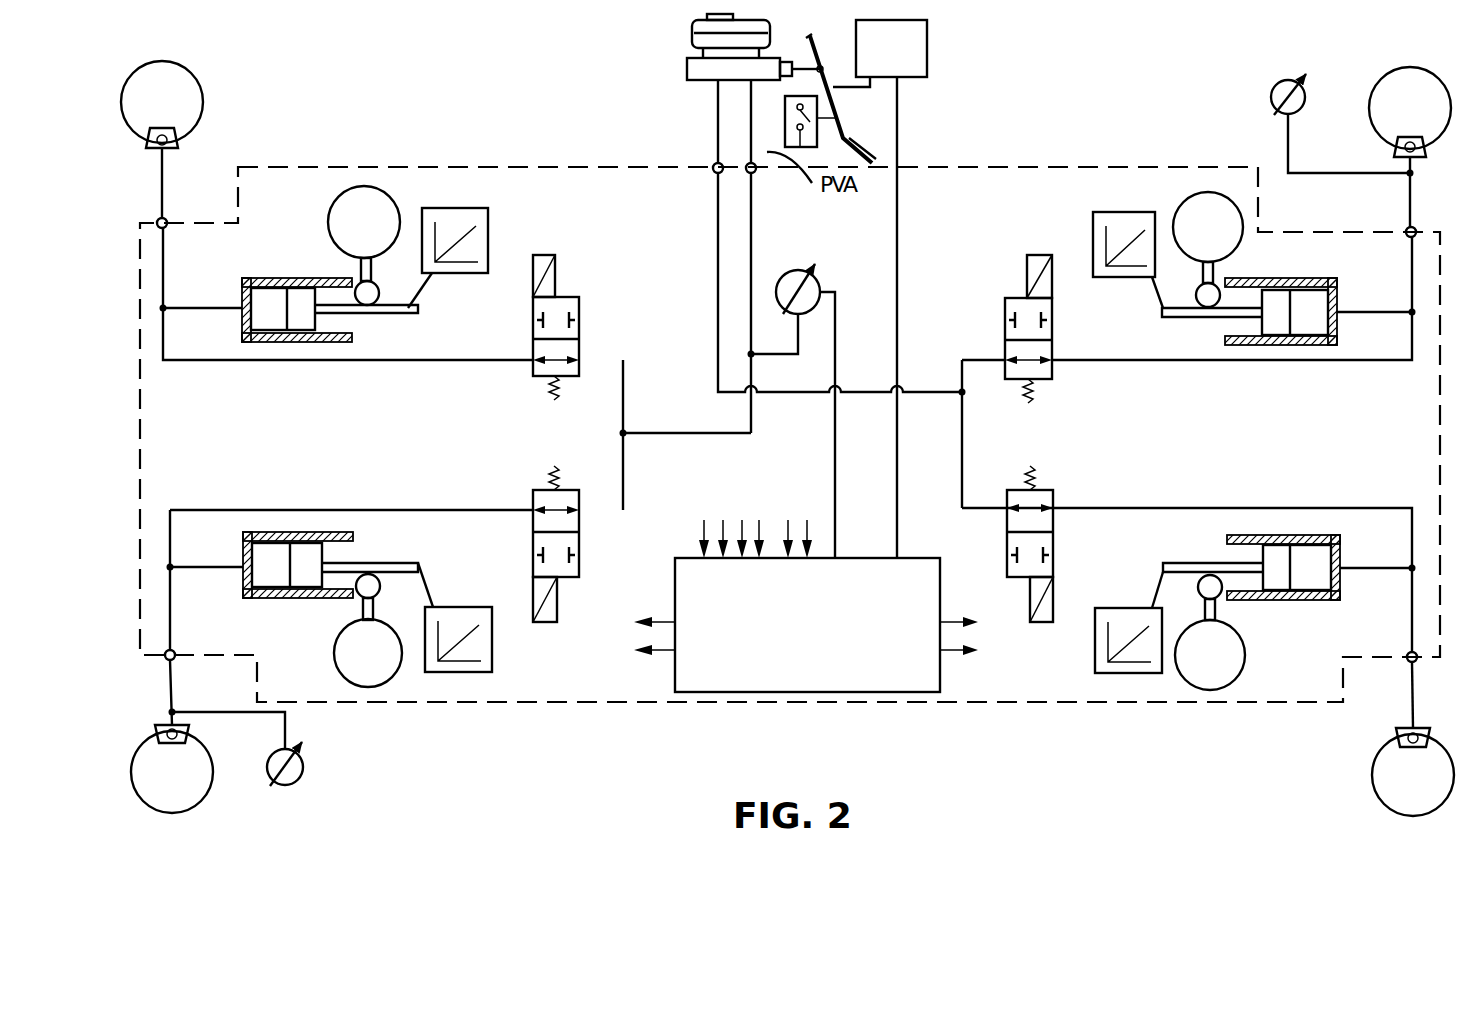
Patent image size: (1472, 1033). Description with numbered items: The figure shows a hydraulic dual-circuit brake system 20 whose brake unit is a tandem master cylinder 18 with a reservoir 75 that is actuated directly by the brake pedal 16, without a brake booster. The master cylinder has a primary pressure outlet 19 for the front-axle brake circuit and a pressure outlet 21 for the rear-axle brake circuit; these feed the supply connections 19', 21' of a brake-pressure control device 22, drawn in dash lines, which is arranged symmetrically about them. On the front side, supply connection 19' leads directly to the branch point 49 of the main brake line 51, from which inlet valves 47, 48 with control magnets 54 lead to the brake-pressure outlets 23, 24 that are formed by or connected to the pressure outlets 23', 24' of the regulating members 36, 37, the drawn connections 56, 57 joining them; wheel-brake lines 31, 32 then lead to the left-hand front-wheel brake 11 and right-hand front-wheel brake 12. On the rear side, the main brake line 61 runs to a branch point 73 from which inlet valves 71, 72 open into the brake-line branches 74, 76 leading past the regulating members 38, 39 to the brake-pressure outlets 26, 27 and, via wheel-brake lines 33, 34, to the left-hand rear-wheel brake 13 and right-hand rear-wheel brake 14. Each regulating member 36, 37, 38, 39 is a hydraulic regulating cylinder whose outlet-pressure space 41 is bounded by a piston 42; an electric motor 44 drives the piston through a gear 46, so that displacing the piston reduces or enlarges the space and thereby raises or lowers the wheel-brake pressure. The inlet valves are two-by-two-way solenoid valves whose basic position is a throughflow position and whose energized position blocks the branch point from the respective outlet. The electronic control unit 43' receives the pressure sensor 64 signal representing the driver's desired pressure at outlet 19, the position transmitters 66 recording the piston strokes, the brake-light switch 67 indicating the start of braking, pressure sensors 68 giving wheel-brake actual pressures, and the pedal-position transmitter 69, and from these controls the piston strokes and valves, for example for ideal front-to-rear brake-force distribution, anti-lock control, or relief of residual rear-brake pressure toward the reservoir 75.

The left-hand front-wheel brake 11 is at (207, 783).
The right-hand front-wheel brake 12 is at (195, 114).
The left-hand rear-wheel brake 13 is at (1373, 768).
The right-hand rear-wheel brake 14 is at (1370, 120).
The brake pedal 16 is at (843, 118).
The tandem master cylinder 18 is at (668, 66).
The primary pressure outlet 19 is at (738, 256).
The supply connection 19' is at (778, 188).
The brake system 20 is at (500, 105).
The pressure outlet 21 is at (798, 236).
The supply connection 21' is at (684, 188).
The brake-pressure control device 22 is at (948, 158).
The brake-pressure outlet 23 is at (196, 638).
The pressure outlet of regulating member 23' is at (212, 597).
The brake-pressure outlet 24 is at (185, 238).
The pressure outlet of regulating member 24' is at (210, 288).
The brake-pressure outlet 26 is at (1414, 663).
The brake-pressure outlet 27 is at (1414, 227).
The wheel-brake line 31 is at (175, 690).
The wheel-brake line 32 is at (164, 182).
The wheel-brake line 33 is at (1410, 695).
The wheel-brake line 34 is at (1408, 195).
The brake-pressure regulating member 36 is at (241, 552).
The brake-pressure regulating member 37 is at (240, 318).
The brake-pressure regulating member 38 is at (1343, 582).
The brake-pressure regulating member 39 is at (1342, 306).
The outlet-pressure space 41 is at (268, 290).
The piston 42 is at (300, 290).
The electronic control unit 43' is at (836, 606).
The electric motor 44 is at (336, 212).
The gear 46 is at (383, 292).
The inlet valve 47 is at (533, 500).
The inlet valve 48 is at (535, 375).
The branch point 49 is at (621, 433).
The main brake line 51 is at (670, 430).
The control magnet 54 is at (556, 258).
The line to actuator 36 56 is at (405, 510).
The line to actuator 37 57 is at (400, 362).
The main brake line 61 is at (717, 300).
The pressure sensor 64 is at (822, 286).
The position transmitter 66 is at (470, 275).
The brake-light switch 67 is at (785, 120).
The pressure sensor 68 is at (304, 767).
The pedal-position transmitter 69 is at (920, 35).
The inlet valve 71 is at (1007, 500).
The inlet valve 72 is at (1008, 376).
The branch point 73 is at (962, 397).
The brake-line branch 74 is at (1120, 508).
The reservoir 75 is at (690, 44).
The brake-line branch 76 is at (1135, 362).